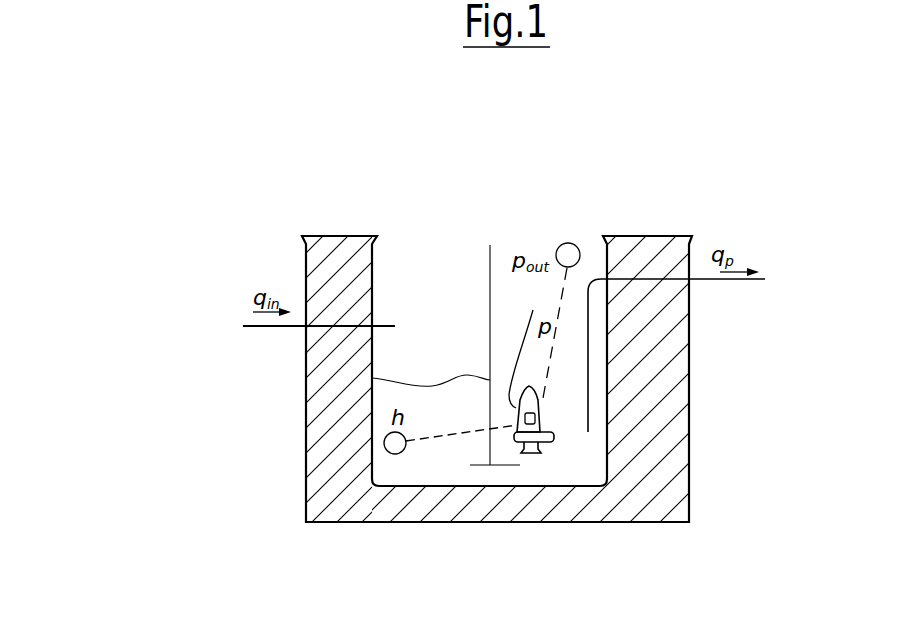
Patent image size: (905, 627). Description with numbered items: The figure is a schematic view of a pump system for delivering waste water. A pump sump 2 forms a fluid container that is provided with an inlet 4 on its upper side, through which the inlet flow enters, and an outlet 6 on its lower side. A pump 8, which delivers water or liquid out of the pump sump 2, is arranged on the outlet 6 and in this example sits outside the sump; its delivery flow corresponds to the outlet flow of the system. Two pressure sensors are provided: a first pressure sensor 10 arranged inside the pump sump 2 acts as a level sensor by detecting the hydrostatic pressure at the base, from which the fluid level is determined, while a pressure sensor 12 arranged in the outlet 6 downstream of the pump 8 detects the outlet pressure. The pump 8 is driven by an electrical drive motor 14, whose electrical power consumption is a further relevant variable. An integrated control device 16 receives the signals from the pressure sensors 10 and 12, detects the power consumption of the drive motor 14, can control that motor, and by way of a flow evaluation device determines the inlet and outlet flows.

The pump sump 2 is at (448, 229).
The inlet 4 is at (389, 325).
The outlet 6 is at (520, 465).
The pump 8 is at (543, 453).
The first pressure sensor 10 is at (408, 450).
The pressure sensor 12 is at (578, 245).
The electrical drive motor 14 is at (541, 420).
The integrated control device 16 is at (554, 437).